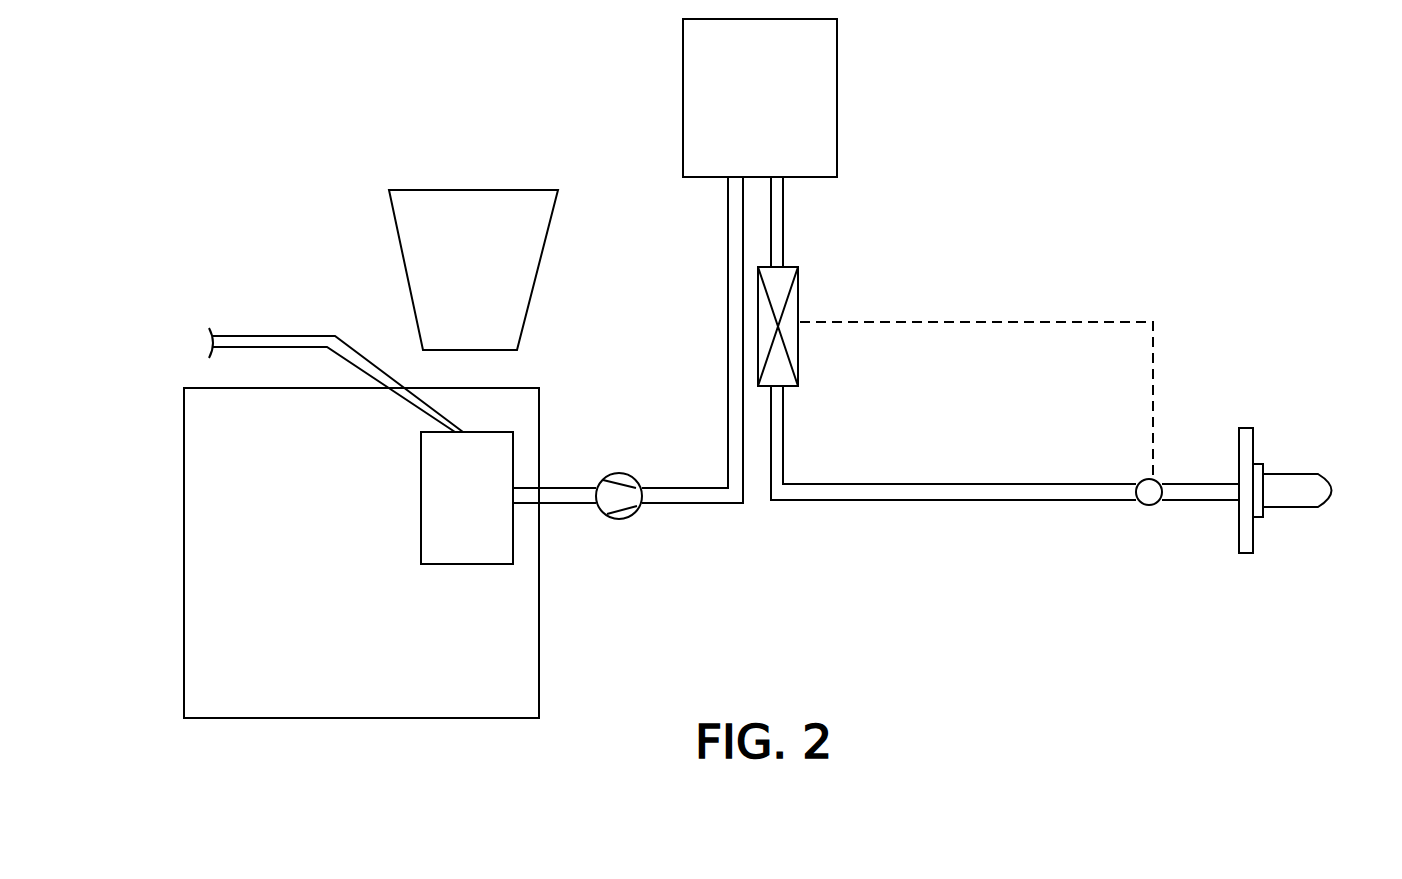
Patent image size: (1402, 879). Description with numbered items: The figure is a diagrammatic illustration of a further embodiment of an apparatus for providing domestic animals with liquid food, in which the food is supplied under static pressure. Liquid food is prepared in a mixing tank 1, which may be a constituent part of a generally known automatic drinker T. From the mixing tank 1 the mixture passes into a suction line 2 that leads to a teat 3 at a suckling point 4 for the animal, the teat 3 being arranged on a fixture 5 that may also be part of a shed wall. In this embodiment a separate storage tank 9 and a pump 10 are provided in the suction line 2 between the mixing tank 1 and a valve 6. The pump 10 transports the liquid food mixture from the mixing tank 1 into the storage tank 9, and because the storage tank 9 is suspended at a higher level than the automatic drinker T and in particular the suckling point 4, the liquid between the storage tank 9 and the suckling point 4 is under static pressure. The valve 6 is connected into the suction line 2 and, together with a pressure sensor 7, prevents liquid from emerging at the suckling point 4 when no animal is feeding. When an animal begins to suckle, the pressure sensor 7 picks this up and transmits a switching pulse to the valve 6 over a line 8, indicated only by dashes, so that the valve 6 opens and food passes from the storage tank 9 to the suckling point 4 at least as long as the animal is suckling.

The automatic drinker T is at (178, 282).
The mixing tank 1 is at (480, 528).
The suction line 2 is at (705, 503).
The teat 3 is at (1313, 487).
The suckling point 4 is at (1302, 438).
The fixture 5 is at (1247, 535).
The valve 6 is at (793, 290).
The pressure sensor 7 is at (1157, 485).
The line 8 is at (1010, 321).
The storage tank 9 is at (806, 107).
The pump 10 is at (620, 497).